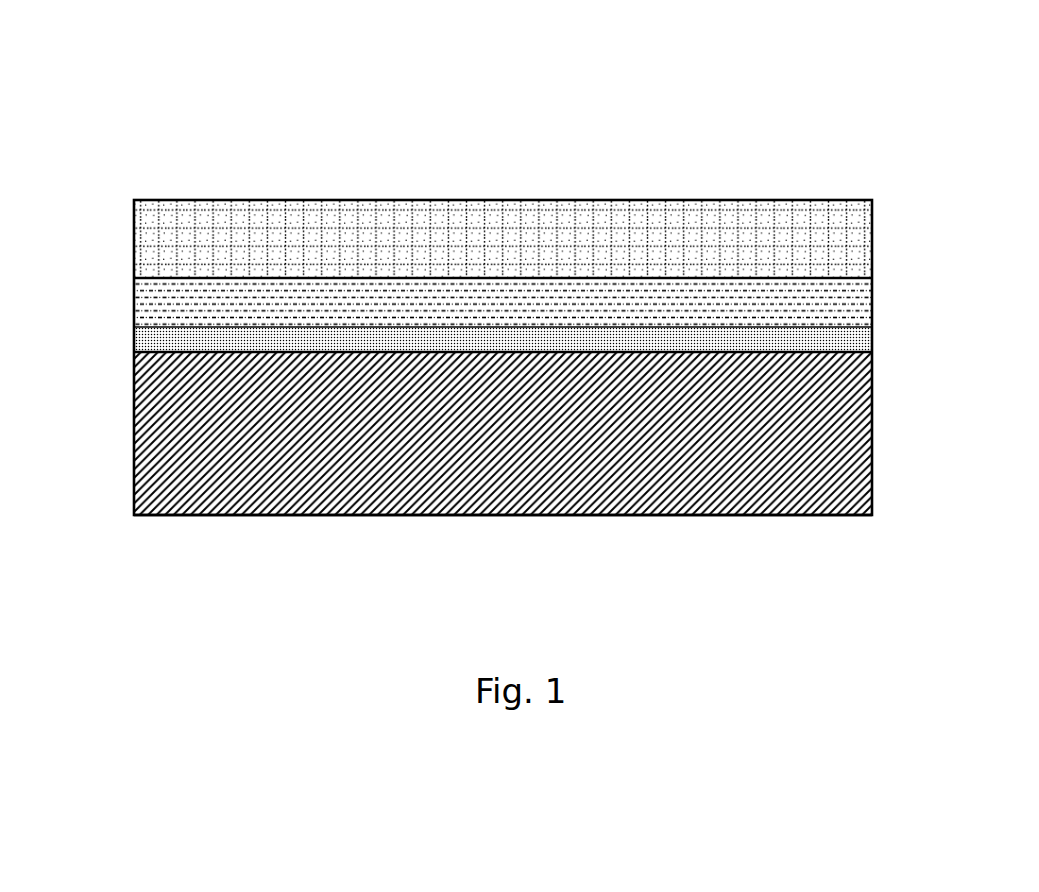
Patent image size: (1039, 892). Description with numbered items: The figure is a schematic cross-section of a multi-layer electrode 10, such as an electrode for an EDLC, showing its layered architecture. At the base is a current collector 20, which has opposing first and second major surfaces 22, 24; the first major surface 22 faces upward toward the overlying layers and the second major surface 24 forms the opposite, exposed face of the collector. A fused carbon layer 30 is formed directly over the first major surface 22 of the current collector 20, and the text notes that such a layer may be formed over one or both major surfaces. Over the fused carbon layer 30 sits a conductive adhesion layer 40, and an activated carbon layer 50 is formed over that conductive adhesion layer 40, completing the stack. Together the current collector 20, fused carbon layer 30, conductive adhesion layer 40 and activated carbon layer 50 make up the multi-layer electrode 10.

The multi-layer electrode 10 is at (292, 136).
The current collector 20 is at (825, 438).
The first major surface 22 is at (170, 351).
The second major surface 24 is at (183, 515).
The fused carbon layer 30 is at (825, 342).
The conductive adhesion layer 40 is at (822, 300).
The activated carbon layer 50 is at (822, 226).